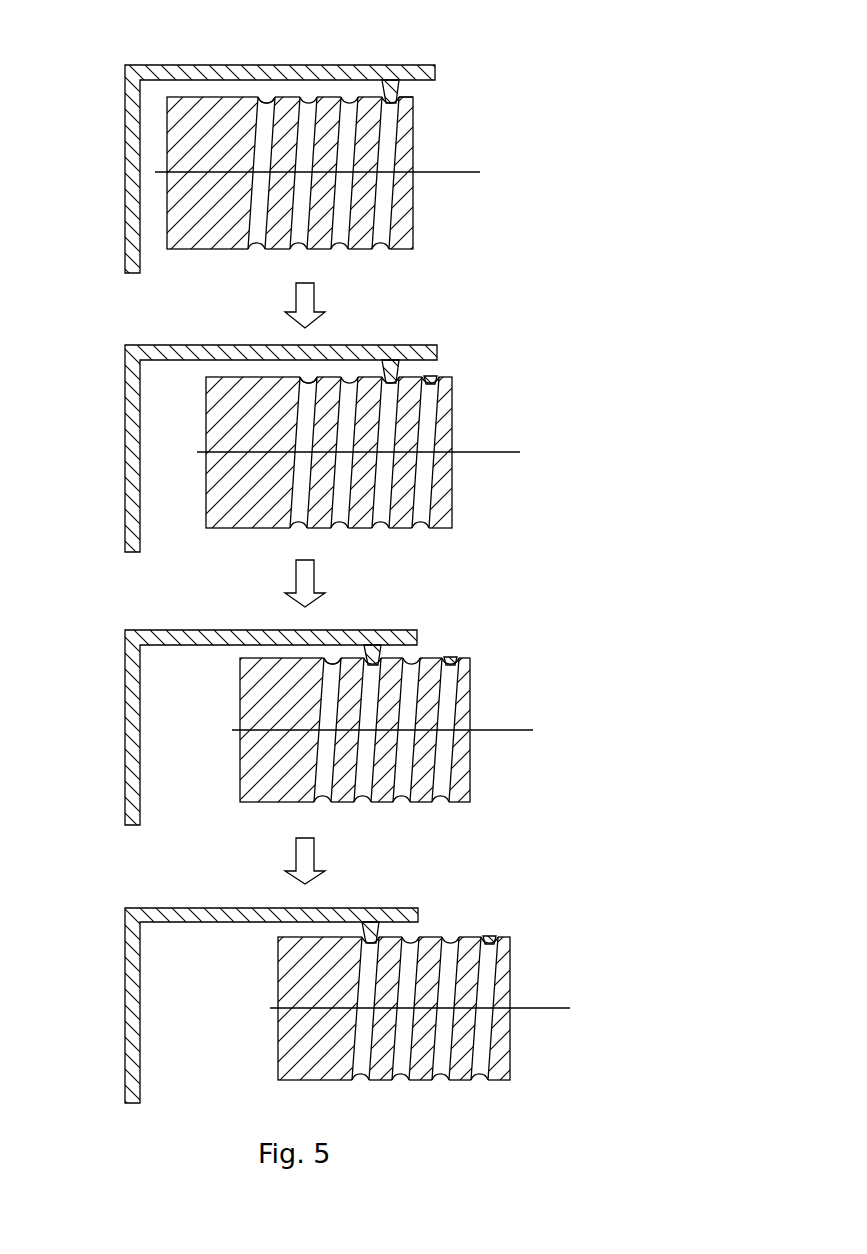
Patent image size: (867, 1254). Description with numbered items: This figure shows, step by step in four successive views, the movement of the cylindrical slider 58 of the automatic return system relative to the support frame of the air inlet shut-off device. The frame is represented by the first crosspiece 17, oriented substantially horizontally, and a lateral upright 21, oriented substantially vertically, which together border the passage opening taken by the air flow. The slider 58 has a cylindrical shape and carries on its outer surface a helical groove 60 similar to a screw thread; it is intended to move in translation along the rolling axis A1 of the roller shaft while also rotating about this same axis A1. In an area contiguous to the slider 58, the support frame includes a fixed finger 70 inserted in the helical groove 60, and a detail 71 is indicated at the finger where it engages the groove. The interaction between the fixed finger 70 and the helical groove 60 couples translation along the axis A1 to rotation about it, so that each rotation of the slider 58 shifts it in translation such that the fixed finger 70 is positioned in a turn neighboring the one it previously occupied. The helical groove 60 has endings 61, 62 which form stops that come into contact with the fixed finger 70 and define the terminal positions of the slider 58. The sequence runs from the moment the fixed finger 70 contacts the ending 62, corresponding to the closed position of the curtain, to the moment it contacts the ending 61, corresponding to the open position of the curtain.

The first crosspiece 17 is at (165, 76).
The lateral upright 21 is at (130, 168).
The cylindrical slider 58 is at (413, 210).
The helical groove 60 is at (380, 252).
The ending of the helical groove 61 is at (265, 100).
The ending of the helical groove 62 is at (437, 382).
The fixed finger 70 is at (400, 85).
The protrusion tip 71 is at (405, 100).
The rolling axis A1 is at (362, 592).